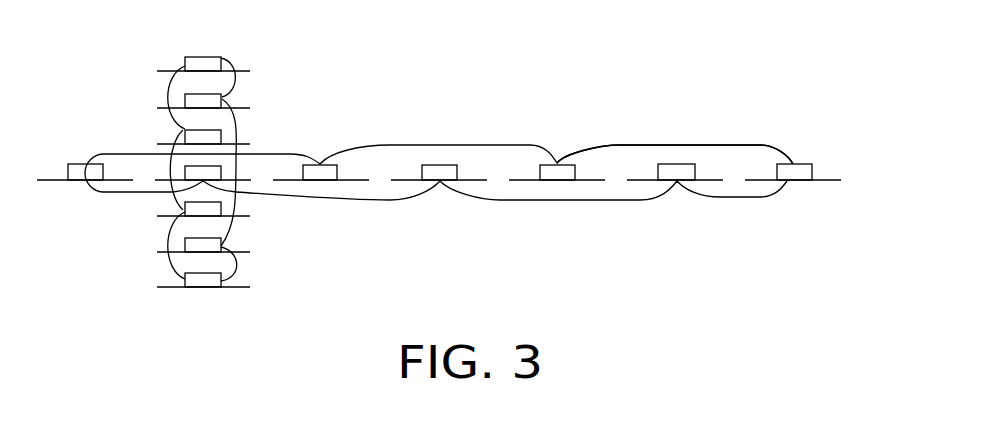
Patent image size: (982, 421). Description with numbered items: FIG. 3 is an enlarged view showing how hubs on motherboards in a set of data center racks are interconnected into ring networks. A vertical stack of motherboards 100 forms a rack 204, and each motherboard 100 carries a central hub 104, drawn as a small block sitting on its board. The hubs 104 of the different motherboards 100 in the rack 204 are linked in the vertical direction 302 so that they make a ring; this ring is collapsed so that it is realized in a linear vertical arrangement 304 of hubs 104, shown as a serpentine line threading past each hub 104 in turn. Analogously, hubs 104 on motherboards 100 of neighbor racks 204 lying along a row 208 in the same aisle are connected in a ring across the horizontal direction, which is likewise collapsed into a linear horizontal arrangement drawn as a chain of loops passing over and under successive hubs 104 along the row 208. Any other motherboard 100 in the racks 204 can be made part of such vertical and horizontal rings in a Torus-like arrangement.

The motherboard 100 is at (238, 70).
The hub 104 is at (202, 55).
The rack 204 is at (207, 155).
The row 208 is at (447, 208).
The vertical direction 302 is at (238, 127).
The linear vertical arrangement 304 is at (660, 142).